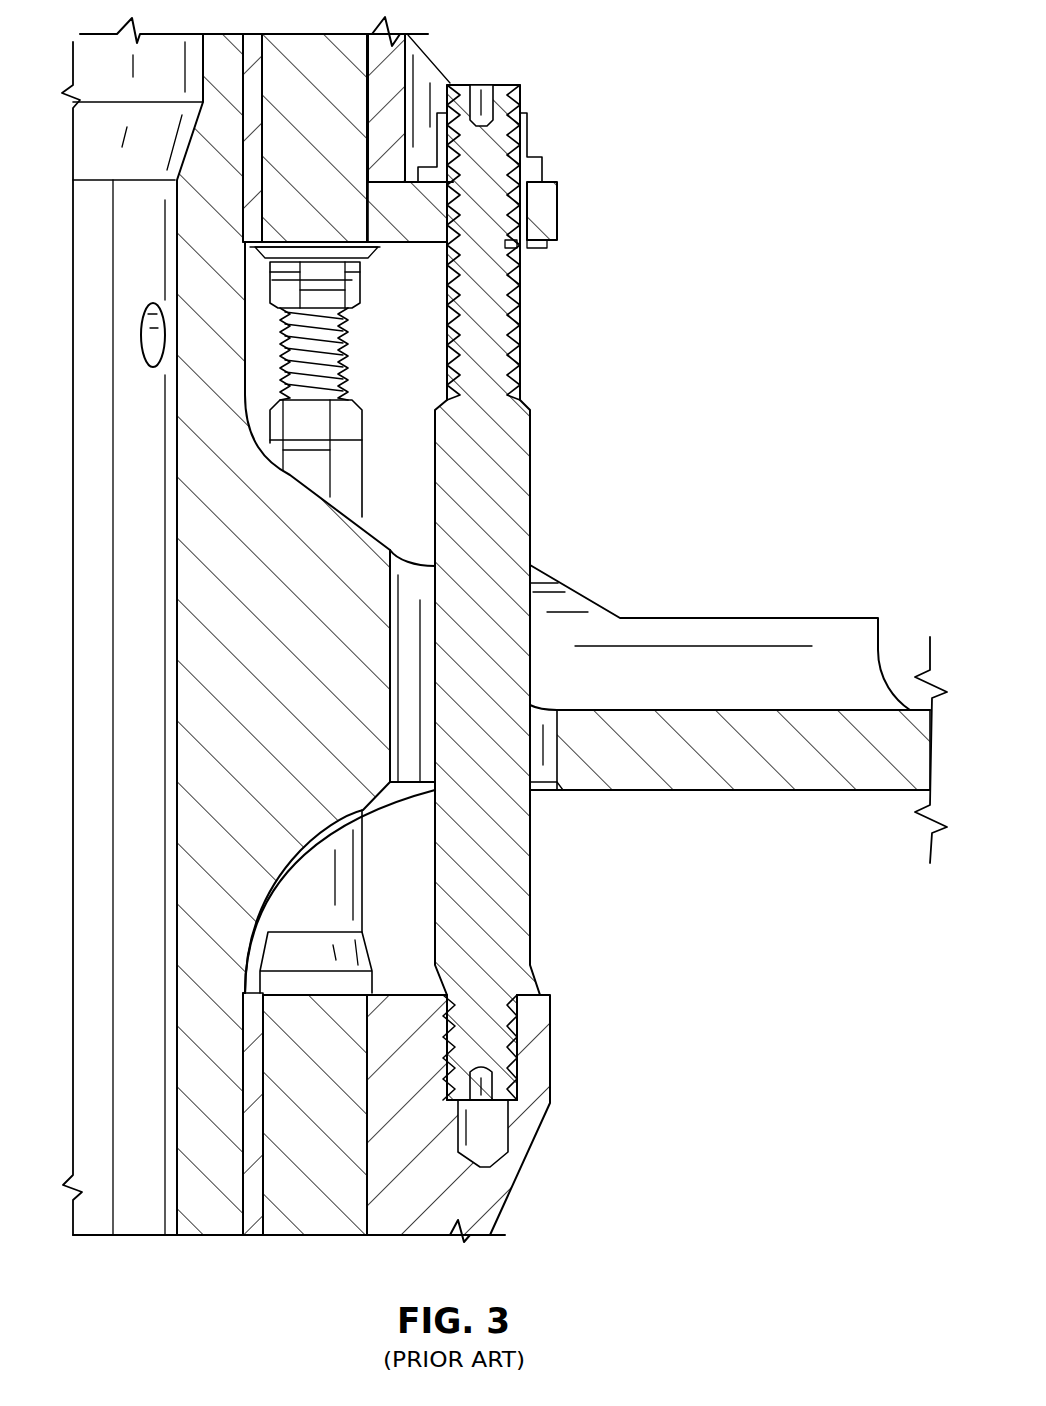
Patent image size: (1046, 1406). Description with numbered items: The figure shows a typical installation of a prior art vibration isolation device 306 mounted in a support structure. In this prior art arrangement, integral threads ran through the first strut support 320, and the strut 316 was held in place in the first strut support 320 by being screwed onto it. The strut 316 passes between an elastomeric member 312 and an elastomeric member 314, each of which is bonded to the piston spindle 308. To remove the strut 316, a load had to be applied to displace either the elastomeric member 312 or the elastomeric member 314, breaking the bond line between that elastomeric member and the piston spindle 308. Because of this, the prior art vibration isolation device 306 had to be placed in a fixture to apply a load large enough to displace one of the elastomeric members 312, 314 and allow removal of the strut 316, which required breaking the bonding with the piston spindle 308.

The prior art vibration isolation device 306 is at (640, 70).
The piston spindle 308 is at (245, 67).
The elastomeric member 312 is at (368, 123).
The elastomeric member 314 is at (370, 1187).
The strut 316 is at (532, 454).
The first strut support 320 is at (557, 212).